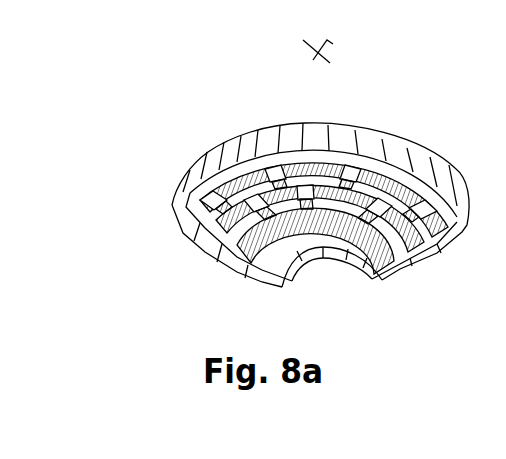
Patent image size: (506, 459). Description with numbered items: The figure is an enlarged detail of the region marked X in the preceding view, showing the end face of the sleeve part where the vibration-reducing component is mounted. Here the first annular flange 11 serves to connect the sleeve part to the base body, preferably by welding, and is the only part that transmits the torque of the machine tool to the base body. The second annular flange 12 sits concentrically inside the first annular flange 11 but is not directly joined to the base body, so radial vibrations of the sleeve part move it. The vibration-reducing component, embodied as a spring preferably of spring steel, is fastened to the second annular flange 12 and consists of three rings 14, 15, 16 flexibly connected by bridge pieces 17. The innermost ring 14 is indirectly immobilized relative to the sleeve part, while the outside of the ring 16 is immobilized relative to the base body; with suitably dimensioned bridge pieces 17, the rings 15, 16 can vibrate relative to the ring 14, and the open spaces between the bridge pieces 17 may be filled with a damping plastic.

The first annular flange 11 is at (360, 145).
The second annular flange 12 is at (316, 238).
The innermost ring 14 is at (262, 258).
The ring 15 is at (214, 228).
The ring 16 is at (200, 202).
The bridge pieces 17 is at (264, 188).